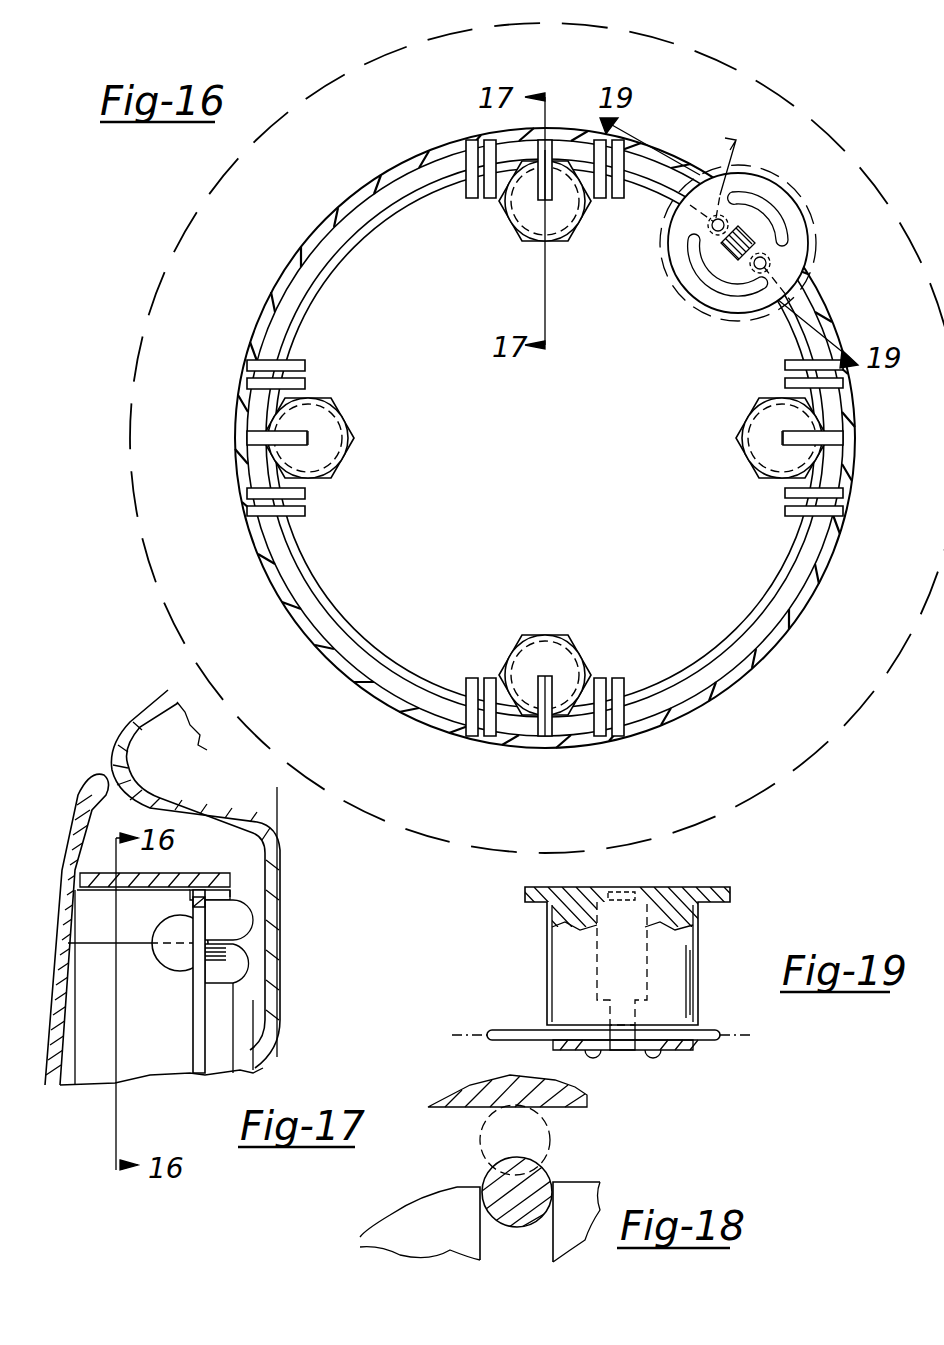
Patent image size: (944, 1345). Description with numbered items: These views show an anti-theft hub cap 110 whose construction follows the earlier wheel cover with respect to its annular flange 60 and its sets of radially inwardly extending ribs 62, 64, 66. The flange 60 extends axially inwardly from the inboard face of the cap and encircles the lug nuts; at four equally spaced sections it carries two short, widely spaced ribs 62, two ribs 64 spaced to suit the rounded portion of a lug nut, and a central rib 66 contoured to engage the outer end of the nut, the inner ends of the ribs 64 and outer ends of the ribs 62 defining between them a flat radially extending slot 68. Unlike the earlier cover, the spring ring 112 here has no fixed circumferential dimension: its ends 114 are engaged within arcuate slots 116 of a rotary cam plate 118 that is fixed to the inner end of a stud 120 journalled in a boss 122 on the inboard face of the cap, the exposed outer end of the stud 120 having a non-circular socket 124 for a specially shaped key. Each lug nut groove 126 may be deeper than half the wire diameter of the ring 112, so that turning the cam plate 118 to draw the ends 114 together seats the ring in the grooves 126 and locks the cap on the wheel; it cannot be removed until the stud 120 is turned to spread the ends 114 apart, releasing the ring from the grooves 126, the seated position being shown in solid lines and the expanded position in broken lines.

In FIG. 16, the annular flange 60 is at (690, 717).
In FIG. 17, the annular flange 60 is at (173, 872).
In FIG. 16, the ribs 62 is at (622, 690).
In FIG. 17, the ribs 62 is at (238, 888).
In FIG. 16, the ribs 64 is at (602, 678).
In FIG. 16, the central rib 66 is at (548, 678).
In FIG. 17, the central rib 66 is at (95, 930).
In FIG. 17, the radially extending slot 68 is at (200, 892).
In FIG. 16, the hub cap 110 is at (806, 748).
In FIG. 16, the spring ring 112 is at (316, 582).
In FIG. 17, the spring ring 112 is at (195, 1042).
In FIG. 19, the spring ring 112 is at (602, 1035).
In FIG. 18, the spring ring 112 is at (550, 1125).
In FIG. 16, the ends of the ring 114 is at (825, 258).
In FIG. 19, the ends of the ring 114 is at (655, 1062).
In FIG. 16, the arcuate slots 116 is at (722, 282).
In FIG. 16, the rotary cam plate 118 is at (775, 250).
In FIG. 16, the stud 120 is at (738, 243).
In FIG. 17, the stud 120 is at (238, 912).
In FIG. 19, the stud 120 is at (633, 910).
In FIG. 19, the boss 122 is at (683, 962).
In FIG. 19, the non-circular socket 124 is at (632, 888).
In FIG. 17, the groove 126 is at (195, 963).
In FIG. 18, the groove 126 is at (540, 1250).